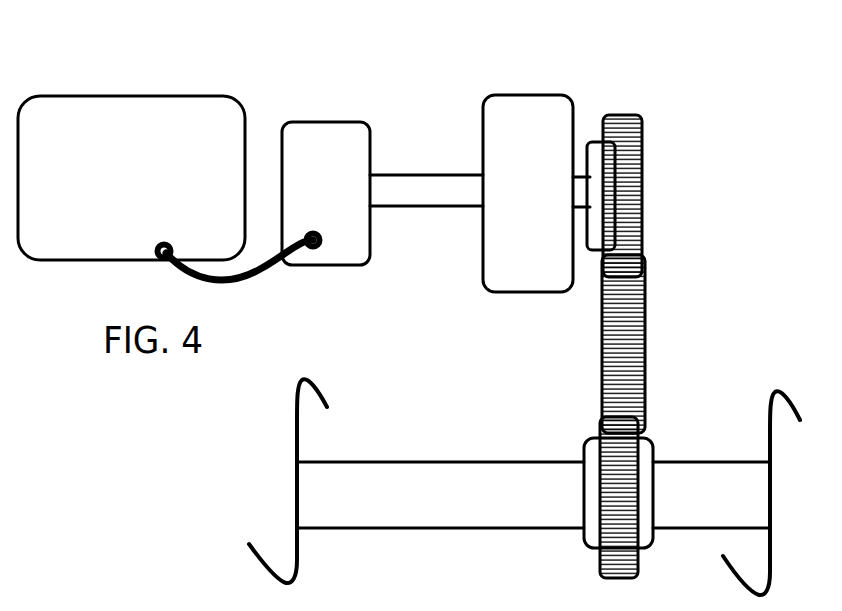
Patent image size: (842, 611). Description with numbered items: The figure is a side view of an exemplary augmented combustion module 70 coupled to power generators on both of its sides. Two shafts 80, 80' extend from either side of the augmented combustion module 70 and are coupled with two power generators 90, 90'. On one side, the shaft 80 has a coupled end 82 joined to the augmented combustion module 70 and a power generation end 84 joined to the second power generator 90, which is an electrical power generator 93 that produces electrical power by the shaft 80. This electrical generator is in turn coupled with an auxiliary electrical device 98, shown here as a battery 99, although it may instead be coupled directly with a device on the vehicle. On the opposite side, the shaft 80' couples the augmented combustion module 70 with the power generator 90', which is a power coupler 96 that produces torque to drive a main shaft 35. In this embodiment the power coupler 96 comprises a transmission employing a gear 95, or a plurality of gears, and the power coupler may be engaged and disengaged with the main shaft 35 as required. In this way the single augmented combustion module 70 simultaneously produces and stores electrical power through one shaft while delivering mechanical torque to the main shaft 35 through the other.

The auxiliary electrical device 98 is at (59, 133).
The battery 99 is at (107, 140).
The electrical power generator 93 is at (302, 155).
The second power generator 90 is at (326, 156).
The power generation end 84 is at (370, 173).
The coupled end 82 is at (481, 172).
The shaft 80 is at (426, 243).
The augmented combustion module 70 is at (517, 142).
The shaft 80' is at (592, 124).
The power generator 90' is at (664, 196).
The gear 95 is at (628, 317).
The power coupler 96 is at (627, 367).
The main shaft 35 is at (464, 486).